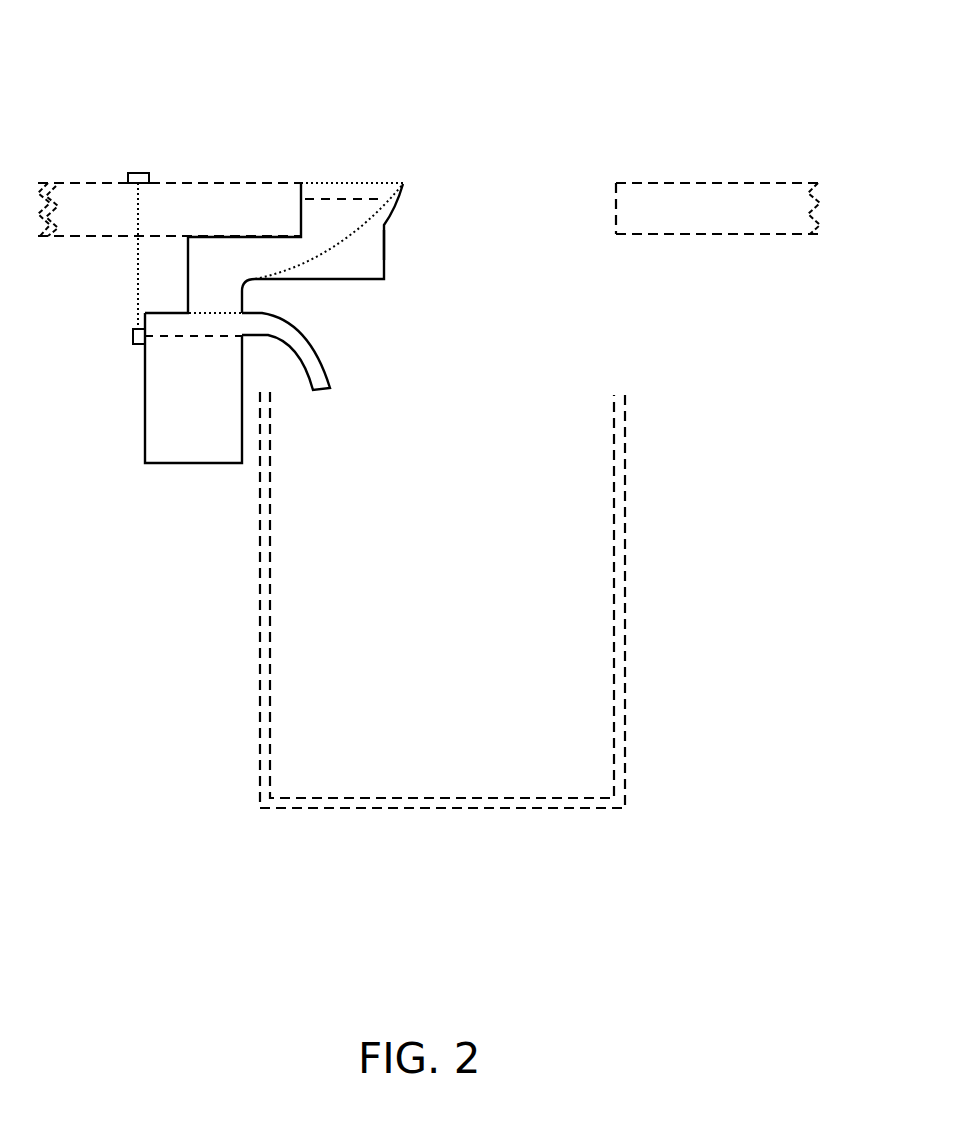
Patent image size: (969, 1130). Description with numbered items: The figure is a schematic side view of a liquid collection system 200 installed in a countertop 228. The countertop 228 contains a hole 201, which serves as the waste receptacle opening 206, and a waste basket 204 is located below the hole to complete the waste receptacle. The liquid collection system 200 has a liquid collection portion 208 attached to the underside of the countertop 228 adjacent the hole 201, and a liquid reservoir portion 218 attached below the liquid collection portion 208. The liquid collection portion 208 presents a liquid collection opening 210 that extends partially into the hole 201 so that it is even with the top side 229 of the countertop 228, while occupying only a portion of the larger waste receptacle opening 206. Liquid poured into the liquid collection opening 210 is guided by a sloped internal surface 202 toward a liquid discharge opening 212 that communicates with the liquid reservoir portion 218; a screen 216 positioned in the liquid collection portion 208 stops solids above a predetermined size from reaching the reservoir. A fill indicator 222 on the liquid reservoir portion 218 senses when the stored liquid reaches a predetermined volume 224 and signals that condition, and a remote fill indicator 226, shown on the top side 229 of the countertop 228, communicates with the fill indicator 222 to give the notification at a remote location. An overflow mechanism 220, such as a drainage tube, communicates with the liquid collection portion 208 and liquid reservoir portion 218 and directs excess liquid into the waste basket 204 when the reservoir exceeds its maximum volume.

The liquid collection system 200 is at (649, 28).
The hole 201 is at (586, 155).
The internal surface 202 is at (335, 242).
The waste basket 204 is at (245, 735).
The waste receptacle opening 206 is at (502, 183).
The liquid collection portion 208 is at (398, 245).
The liquid collection opening 210 is at (343, 182).
The liquid discharge opening 212 is at (217, 313).
The screen 216 is at (350, 200).
The liquid reservoir portion 218 is at (133, 408).
The overflow mechanism 220 is at (302, 337).
The fill indicator 222 is at (133, 338).
The predetermined volume 224 is at (187, 337).
The remote fill indicator 226 is at (141, 173).
The countertop 228 is at (722, 190).
The top side 229 is at (218, 183).